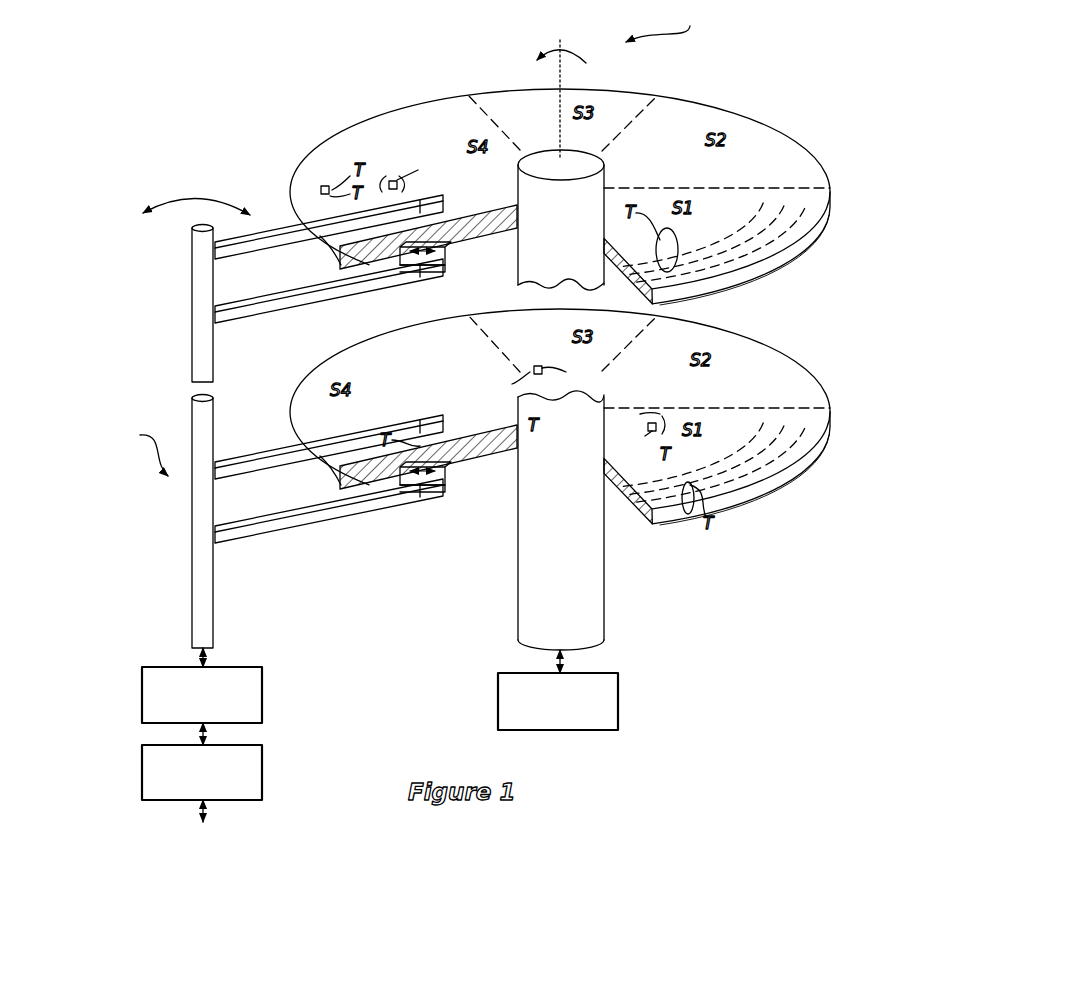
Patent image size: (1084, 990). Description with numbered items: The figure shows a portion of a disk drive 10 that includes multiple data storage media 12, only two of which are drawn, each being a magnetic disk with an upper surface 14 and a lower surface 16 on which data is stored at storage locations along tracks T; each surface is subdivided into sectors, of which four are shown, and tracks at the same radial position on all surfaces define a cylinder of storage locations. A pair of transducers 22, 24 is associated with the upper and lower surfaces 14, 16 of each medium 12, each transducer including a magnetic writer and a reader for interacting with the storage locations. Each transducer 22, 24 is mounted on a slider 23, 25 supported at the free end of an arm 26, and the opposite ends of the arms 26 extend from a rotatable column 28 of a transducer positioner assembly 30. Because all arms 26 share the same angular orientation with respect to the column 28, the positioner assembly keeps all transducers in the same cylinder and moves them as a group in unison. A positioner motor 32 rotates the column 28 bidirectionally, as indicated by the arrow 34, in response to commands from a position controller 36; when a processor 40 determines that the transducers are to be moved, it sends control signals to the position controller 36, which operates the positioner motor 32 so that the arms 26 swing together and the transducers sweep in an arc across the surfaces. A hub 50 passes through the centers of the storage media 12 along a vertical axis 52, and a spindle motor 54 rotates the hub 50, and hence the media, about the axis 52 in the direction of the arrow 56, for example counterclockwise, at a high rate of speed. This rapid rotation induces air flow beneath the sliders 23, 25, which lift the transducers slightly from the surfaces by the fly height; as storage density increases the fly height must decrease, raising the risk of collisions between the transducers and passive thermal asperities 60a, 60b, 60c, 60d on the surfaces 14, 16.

The disk drive 10 is at (662, 22).
The data storage medium 12 is at (790, 133).
The upper surface 14 is at (830, 178).
The lower surface 16 is at (790, 262).
The transducer 22 is at (480, 416).
The slider 23 is at (446, 210).
The transducer 24 is at (447, 250).
The slider 25 is at (446, 268).
The arm 26 is at (288, 248).
The rotatable column 28 is at (190, 364).
The transducer positioner assembly 30 is at (139, 450).
The positioner motor 32 is at (142, 696).
The arrow 34 is at (203, 198).
The position controller 36 is at (142, 782).
The processor 40 is at (199, 834).
The hub 50 is at (604, 602).
The vertical axis 52 is at (582, 72).
The spindle motor 54 is at (618, 705).
The arrow 56 is at (558, 47).
The passive thermal asperity 60a is at (648, 423).
The passive thermal asperity 60b is at (536, 366).
The passive thermal asperity 60c is at (388, 178).
The passive thermal asperity 60d is at (316, 186).